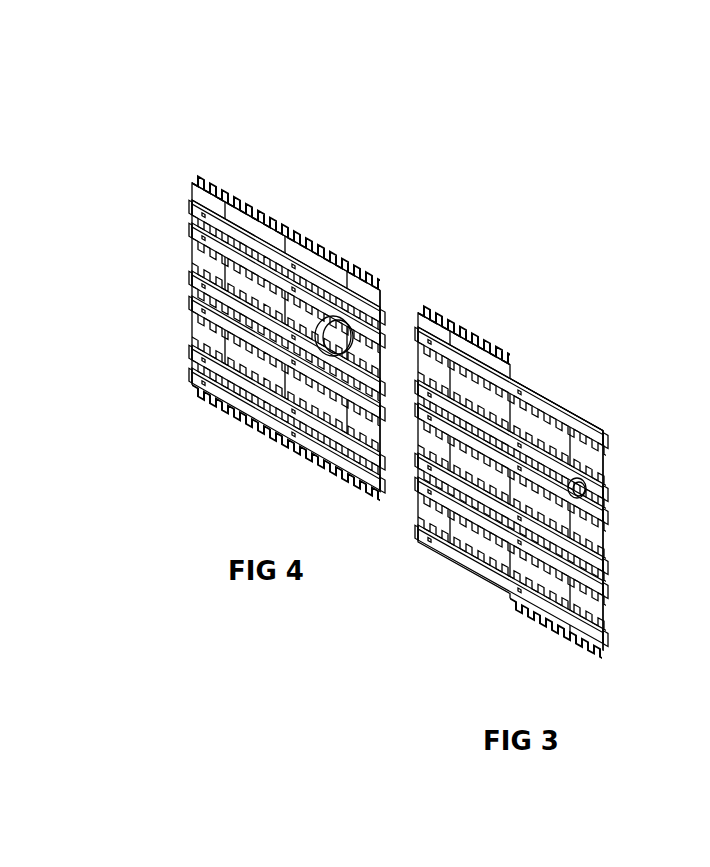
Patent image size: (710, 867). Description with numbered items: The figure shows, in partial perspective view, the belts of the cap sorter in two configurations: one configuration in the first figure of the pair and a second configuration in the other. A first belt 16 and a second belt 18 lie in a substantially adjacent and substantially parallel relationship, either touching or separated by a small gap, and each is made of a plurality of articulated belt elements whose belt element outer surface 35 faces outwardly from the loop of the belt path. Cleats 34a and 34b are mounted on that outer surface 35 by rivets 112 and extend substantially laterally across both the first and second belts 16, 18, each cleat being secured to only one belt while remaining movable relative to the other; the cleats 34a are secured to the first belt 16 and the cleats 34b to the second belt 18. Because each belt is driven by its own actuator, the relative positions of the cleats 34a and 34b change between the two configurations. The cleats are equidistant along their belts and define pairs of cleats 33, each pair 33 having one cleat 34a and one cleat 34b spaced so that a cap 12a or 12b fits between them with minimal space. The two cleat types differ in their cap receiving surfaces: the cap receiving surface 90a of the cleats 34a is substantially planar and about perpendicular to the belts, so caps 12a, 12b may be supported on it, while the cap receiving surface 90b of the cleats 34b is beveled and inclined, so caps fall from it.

In FIG. 4, the first belt 16 is at (192, 250).
In FIG. 3, the first belt 16 is at (418, 520).
In FIG. 4, the second belt 18 is at (362, 265).
In FIG. 3, the second belt 18 is at (522, 388).
In FIG. 3, the cap 12a is at (582, 479).
In FIG. 4, the cap 12b is at (331, 318).
In FIG. 4, the pair of cleats 33 is at (394, 338).
In FIG. 3, the pair of cleats 33 is at (605, 475).
In FIG. 4, the cleat 34a is at (190, 280).
In FIG. 3, the cleat 34a is at (603, 562).
In FIG. 4, the cleat 34b is at (190, 227).
In FIG. 3, the cleat 34b is at (605, 500).
In FIG. 4, the belt element outer surface 35 is at (258, 283).
In FIG. 3, the belt element outer surface 35 is at (438, 365).
In FIG. 4, the cap receiving surface 90a is at (190, 345).
In FIG. 3, the cap receiving surface 90a is at (605, 618).
In FIG. 4, the cap receiving surface 90b is at (197, 178).
In FIG. 3, the cap receiving surface 90b is at (603, 437).
In FIG. 4, the rivet 112 is at (192, 296).
In FIG. 3, the rivet 112 is at (467, 367).